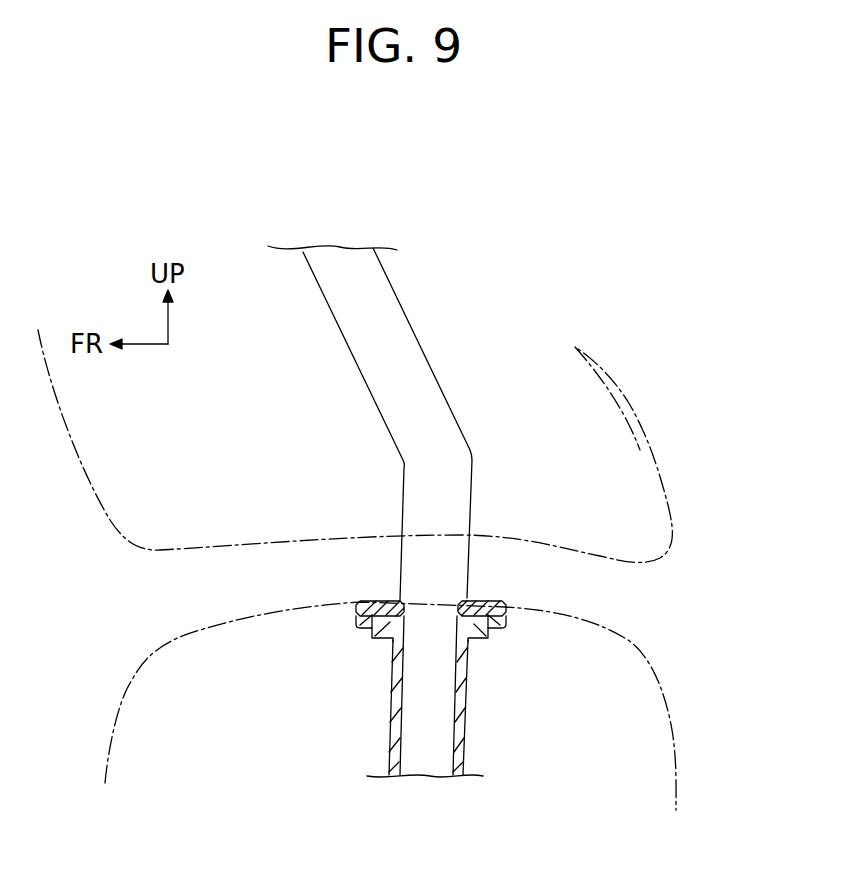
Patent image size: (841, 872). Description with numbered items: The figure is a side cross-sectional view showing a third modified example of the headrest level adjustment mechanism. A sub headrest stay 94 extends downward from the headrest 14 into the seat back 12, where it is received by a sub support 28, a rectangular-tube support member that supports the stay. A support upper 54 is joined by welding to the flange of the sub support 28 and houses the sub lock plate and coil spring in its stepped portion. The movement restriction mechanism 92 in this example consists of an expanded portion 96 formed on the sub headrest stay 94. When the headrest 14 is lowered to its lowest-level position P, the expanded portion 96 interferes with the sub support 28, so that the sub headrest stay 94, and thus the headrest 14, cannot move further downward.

The seat back 12 is at (648, 678).
The headrest 14 is at (387, 427).
The lowest-level position P is at (639, 340).
The sub support 28 is at (468, 688).
The support upper 54 is at (369, 602).
The movement restriction mechanism 92 is at (489, 568).
The sub headrest stay 94 is at (462, 474).
The expanded portion 96 is at (455, 598).